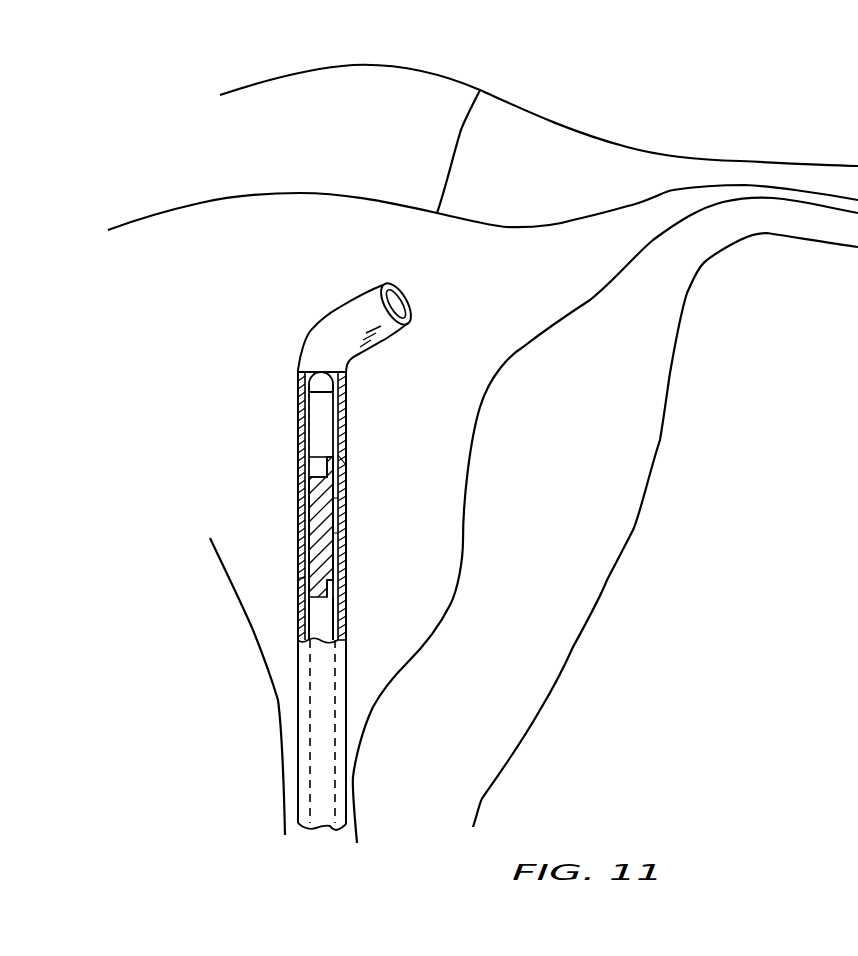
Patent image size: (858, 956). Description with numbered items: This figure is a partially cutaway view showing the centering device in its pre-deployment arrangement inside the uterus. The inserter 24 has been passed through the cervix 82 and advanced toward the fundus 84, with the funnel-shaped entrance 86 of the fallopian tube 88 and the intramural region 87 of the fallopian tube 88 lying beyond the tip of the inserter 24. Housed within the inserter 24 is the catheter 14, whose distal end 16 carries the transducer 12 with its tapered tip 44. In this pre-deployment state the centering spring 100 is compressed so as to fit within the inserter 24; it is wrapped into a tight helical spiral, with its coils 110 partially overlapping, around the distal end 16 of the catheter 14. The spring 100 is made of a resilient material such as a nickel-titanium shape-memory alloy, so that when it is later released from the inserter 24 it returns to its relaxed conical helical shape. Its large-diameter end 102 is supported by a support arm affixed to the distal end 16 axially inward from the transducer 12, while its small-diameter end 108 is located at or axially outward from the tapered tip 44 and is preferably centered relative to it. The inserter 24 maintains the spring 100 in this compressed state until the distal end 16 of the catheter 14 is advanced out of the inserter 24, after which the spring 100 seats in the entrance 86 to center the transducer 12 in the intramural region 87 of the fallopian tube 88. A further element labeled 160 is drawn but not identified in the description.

The transducer 12 is at (323, 418).
The catheter 14 is at (347, 460).
The distal end of the catheter 16 is at (315, 617).
The inserter 24 is at (300, 457).
The tapered tip 44 is at (320, 385).
The cervix 82 is at (353, 767).
The fundus 84 is at (480, 90).
The entrance of the fallopian tube 86 is at (632, 205).
The intramural region 87 is at (687, 188).
The fallopian tube 88 is at (733, 147).
The centering spring 100 is at (317, 512).
The large-diameter end 102 is at (305, 578).
The small-diameter end 108 is at (323, 468).
The coils 110 is at (337, 498).
The recess 160 is at (333, 585).